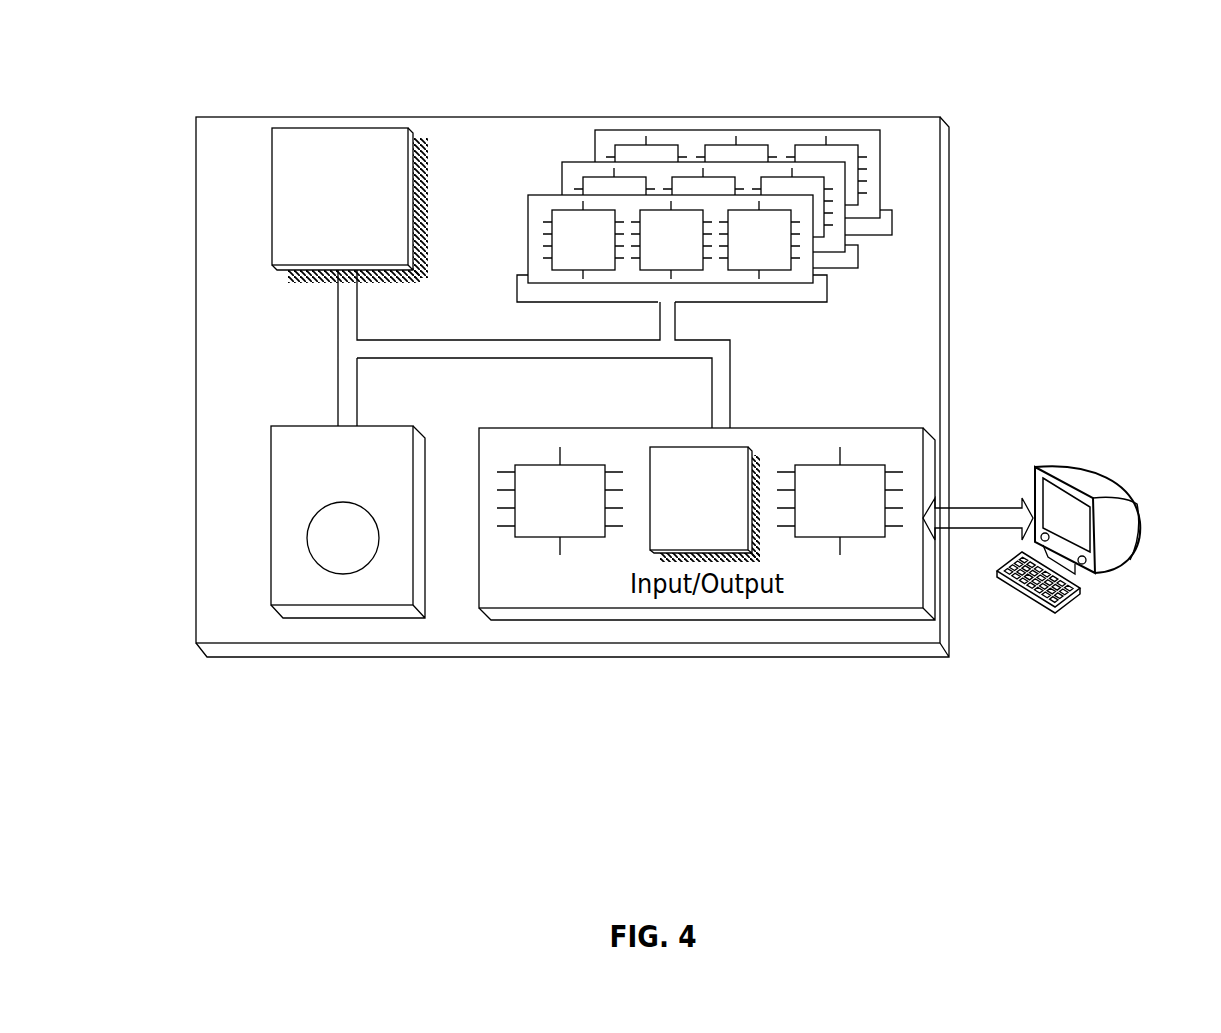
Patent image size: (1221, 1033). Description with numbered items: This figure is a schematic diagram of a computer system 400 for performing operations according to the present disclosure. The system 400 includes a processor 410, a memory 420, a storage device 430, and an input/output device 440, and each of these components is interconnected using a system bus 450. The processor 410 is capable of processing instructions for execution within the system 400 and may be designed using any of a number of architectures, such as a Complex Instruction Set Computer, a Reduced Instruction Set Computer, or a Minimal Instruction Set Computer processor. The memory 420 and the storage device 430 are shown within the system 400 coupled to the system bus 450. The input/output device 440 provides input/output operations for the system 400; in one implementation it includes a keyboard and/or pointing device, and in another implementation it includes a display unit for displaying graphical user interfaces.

The system 400 is at (243, 60).
The processor 410 is at (392, 254).
The memory 420 is at (872, 282).
The storage device 430 is at (403, 601).
The input/output device 440 is at (1132, 498).
The system bus 450 is at (475, 350).